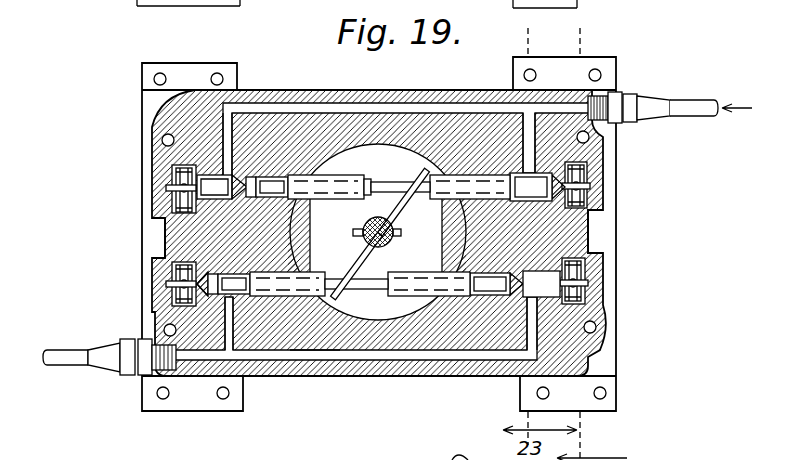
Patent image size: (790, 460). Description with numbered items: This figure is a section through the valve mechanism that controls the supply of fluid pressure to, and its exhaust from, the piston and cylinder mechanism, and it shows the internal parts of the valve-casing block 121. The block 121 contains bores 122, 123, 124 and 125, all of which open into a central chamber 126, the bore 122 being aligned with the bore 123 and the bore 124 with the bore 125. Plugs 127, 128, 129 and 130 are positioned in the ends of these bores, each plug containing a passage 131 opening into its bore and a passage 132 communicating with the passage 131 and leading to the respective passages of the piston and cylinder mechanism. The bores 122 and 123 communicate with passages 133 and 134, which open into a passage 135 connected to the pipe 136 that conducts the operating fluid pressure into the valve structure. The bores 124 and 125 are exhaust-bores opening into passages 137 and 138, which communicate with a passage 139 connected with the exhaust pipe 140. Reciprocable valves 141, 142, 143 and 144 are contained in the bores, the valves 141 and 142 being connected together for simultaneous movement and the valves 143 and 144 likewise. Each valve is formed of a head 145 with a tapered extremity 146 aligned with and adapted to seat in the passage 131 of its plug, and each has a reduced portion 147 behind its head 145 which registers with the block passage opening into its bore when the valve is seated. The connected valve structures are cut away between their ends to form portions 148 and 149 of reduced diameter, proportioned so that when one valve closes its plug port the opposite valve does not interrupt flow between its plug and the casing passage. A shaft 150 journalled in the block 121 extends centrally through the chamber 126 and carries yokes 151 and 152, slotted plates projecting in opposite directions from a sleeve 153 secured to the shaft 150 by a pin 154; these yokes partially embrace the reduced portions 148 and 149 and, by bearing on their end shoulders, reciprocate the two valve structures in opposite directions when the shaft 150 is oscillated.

The valve-casing block 121 is at (328, 130).
The bore 122 is at (165, 206).
The bore 123 is at (514, 150).
The bore 124 is at (238, 305).
The bore 125 is at (520, 300).
The chamber 126 is at (313, 335).
The plug 127 is at (162, 182).
The plug 128 is at (604, 196).
The plug 129 is at (160, 280).
The plug 130 is at (604, 292).
The passage 131 is at (152, 168).
The passage 132 is at (162, 192).
The passage 133 is at (225, 138).
The passage 134 is at (507, 103).
The passage 135 is at (383, 96).
The pipe 136 is at (694, 100).
The passage 137 is at (241, 378).
The passage 138 is at (540, 376).
The passage 139 is at (407, 360).
The exhaust pipe 140 is at (72, 349).
The reciprocable valve 141 is at (250, 175).
The reciprocable valve 142 is at (606, 222).
The reciprocable valve 143 is at (204, 300).
The reciprocable valve 144 is at (514, 298).
The head 145 is at (220, 250).
The tapered extremity 146 is at (215, 187).
The reduced portion 147 is at (281, 178).
The portion of reduced diameter 148 is at (378, 182).
The portion of reduced diameter 149 is at (368, 289).
The shaft 150 is at (372, 225).
The yoke 151 is at (390, 222).
The yoke 152 is at (378, 253).
The sleeve 153 is at (392, 240).
The pin 154 is at (364, 246).